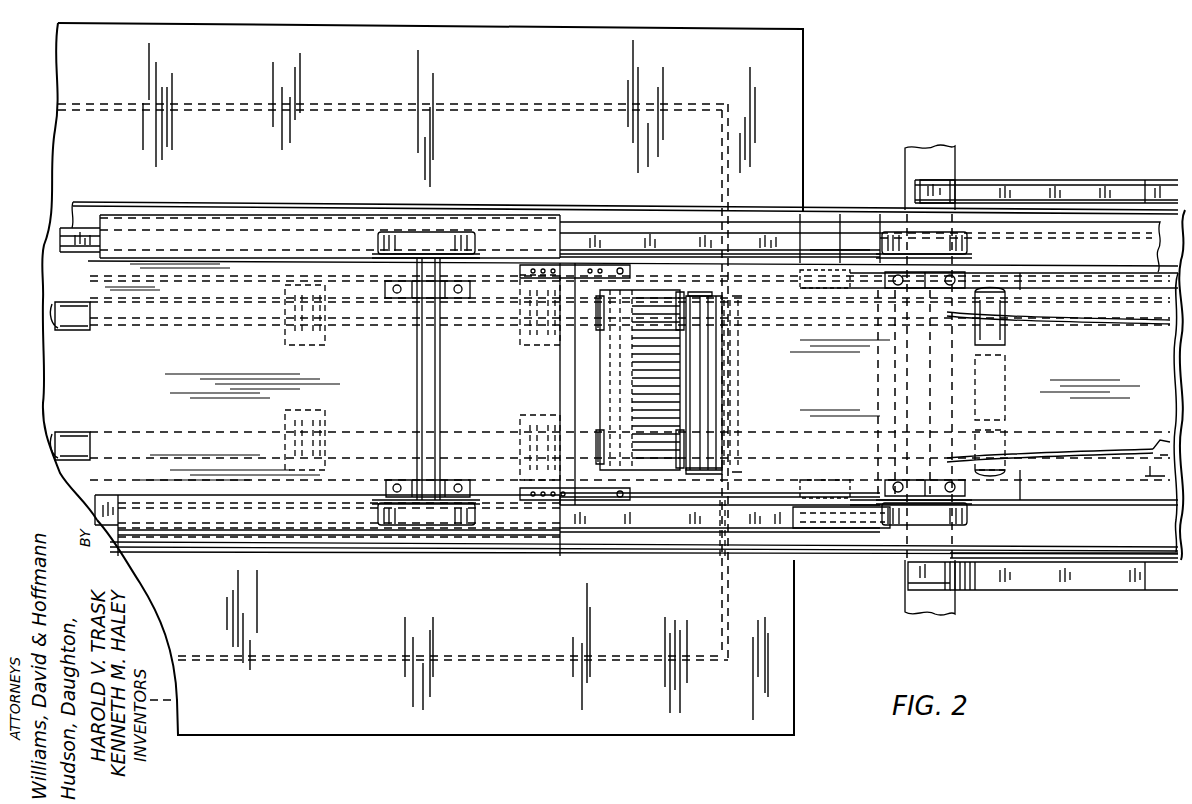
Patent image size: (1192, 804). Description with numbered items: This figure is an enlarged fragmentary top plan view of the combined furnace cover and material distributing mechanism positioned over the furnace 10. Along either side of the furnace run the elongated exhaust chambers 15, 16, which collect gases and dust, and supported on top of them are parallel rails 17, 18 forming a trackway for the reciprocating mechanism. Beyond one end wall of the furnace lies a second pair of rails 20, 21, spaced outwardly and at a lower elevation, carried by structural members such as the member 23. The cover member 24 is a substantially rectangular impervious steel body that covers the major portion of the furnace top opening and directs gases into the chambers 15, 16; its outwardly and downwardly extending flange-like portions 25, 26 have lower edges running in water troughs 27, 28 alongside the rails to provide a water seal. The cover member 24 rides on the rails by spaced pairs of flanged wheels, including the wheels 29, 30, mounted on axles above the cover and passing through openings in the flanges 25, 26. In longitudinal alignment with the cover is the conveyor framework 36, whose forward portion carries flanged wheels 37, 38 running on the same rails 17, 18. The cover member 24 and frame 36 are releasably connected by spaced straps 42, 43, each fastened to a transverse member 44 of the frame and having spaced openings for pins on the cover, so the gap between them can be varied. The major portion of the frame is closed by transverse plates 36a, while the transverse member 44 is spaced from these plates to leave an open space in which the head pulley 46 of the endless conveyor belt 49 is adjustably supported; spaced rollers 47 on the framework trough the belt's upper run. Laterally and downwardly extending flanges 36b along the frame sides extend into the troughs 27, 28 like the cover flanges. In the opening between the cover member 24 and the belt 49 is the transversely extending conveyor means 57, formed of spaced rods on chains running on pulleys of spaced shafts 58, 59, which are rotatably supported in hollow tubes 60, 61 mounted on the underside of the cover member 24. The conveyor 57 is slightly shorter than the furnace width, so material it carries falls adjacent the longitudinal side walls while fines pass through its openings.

The furnace 10 is at (808, 96).
The elongated chamber 15 is at (768, 592).
The elongated chamber 16 is at (760, 152).
The rail 17 is at (773, 523).
The rail 18 is at (780, 245).
The second rail 20 is at (1125, 582).
The second rail 21 is at (1100, 194).
The structural member 23 is at (950, 175).
The cover member 24 is at (315, 188).
The flange-like portion 25 is at (550, 550).
The flange-like portion 26 is at (553, 216).
The trough 27 is at (697, 540).
The trough 28 is at (678, 220).
The flanged wheel 29 is at (422, 548).
The flanged wheel 30 is at (380, 232).
The framework 36 is at (1166, 432).
The transversely extending plate 36a is at (1158, 468).
The flange 36b is at (1118, 520).
The flanged wheel 37 is at (903, 540).
The flanged wheel 38 is at (890, 230).
The strap 42 is at (592, 496).
The strap 43 is at (598, 272).
The transverse member 44 is at (615, 385).
The head pulley 46 is at (722, 453).
The roller 47 is at (1008, 308).
The conveyor belt 49 is at (1112, 330).
The transversely extending conveyor means 57 is at (680, 382).
The shaft 58 is at (62, 434).
The shaft 59 is at (68, 325).
The hollow tube 60 is at (385, 432).
The hollow tube 61 is at (395, 333).